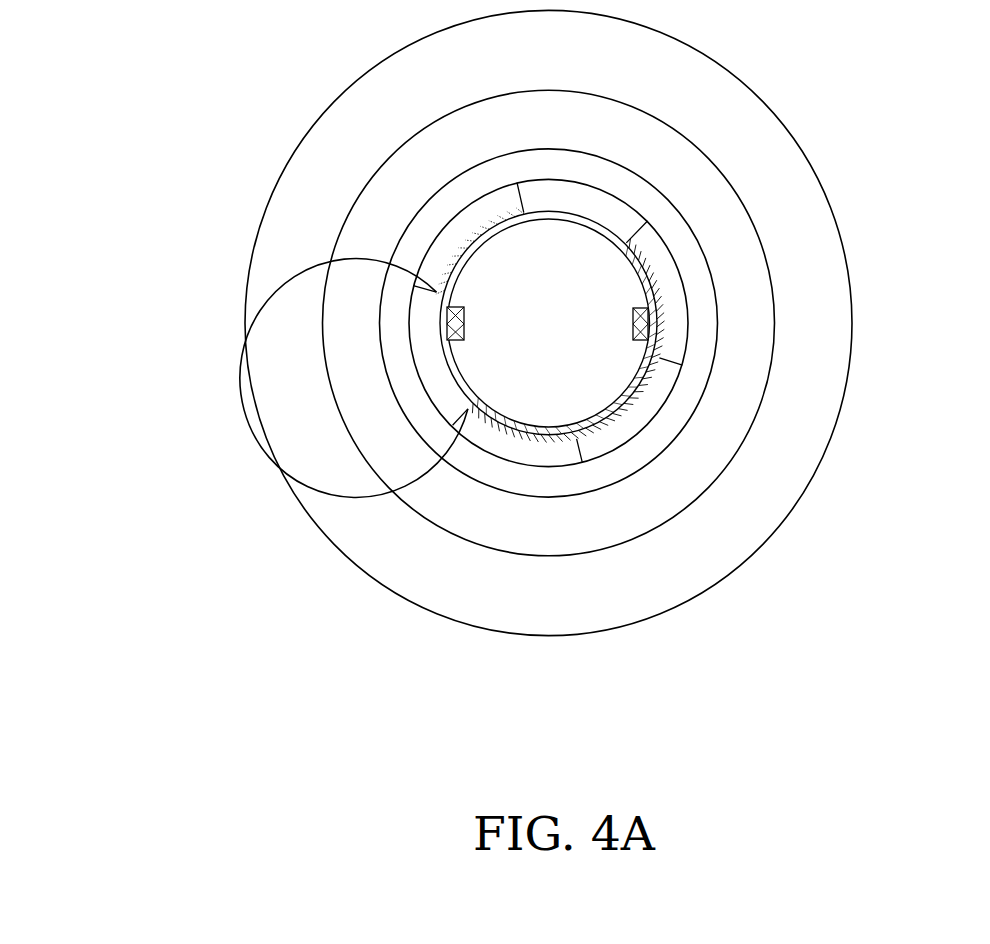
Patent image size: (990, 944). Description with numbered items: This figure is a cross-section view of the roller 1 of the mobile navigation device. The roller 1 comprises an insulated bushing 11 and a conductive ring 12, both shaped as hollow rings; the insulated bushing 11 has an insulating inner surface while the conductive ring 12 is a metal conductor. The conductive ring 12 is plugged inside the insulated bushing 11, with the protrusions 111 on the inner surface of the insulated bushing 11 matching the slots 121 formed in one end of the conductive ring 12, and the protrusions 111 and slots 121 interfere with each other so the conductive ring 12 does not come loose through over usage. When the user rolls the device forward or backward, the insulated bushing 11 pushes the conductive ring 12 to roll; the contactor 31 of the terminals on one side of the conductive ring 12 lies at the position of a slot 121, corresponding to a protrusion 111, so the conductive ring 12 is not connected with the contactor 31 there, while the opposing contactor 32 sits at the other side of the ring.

The roller 1 is at (856, 153).
The insulated bushing 11 is at (283, 253).
The protrusions 111 is at (432, 379).
The conductive ring 12 is at (428, 249).
The slots 121 is at (442, 354).
The contactor 31 is at (452, 321).
The second connector block 32 is at (644, 324).